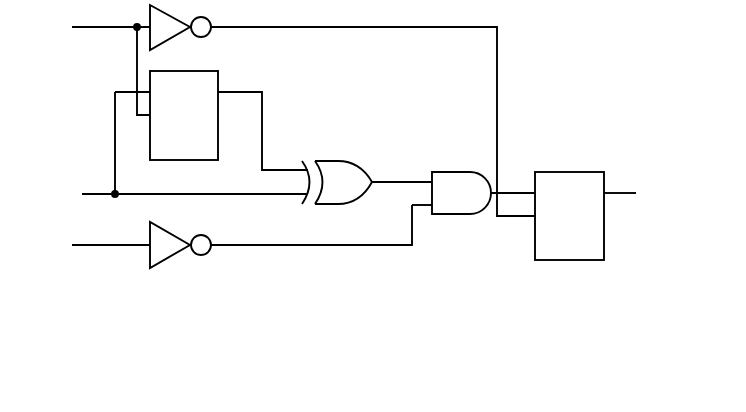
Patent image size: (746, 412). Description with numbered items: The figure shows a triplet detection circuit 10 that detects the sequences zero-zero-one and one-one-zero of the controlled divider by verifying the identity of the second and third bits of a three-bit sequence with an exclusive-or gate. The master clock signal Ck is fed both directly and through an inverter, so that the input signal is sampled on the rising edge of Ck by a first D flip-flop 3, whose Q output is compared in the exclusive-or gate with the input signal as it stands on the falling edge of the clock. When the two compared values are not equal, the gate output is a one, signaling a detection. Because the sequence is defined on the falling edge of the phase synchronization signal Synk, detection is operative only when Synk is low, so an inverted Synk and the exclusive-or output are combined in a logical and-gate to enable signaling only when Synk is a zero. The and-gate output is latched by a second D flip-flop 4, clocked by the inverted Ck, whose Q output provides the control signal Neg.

The flip-flop FF3 3 is at (184, 133).
The flip-flop FF4 4 is at (569, 234).
The circuit of FIG. 10 is at (334, 202).